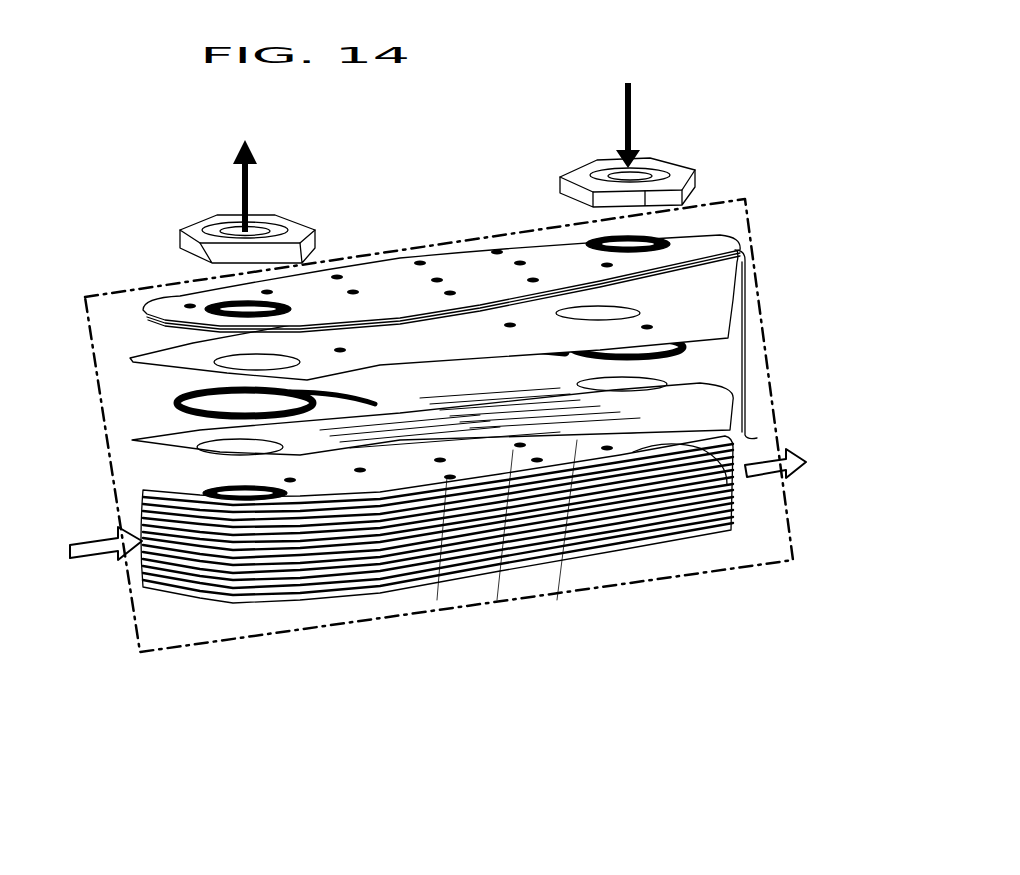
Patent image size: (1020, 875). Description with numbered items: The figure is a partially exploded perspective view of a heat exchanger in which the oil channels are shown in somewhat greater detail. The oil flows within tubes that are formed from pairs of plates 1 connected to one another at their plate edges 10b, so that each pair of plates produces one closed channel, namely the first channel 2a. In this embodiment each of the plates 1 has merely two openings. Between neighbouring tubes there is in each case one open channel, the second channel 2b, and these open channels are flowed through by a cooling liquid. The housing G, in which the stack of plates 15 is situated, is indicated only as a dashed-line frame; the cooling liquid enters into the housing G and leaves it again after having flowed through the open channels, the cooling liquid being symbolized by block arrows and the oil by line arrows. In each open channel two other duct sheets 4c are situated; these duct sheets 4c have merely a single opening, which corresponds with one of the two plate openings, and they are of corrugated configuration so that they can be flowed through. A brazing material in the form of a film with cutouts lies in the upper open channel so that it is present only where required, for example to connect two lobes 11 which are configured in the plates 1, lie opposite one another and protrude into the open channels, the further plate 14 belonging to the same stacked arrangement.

The plate 1 is at (160, 350).
The first channel 2a is at (748, 346).
The second channel 2b is at (233, 303).
The other duct sheet 4c is at (177, 402).
The plate edge 10b is at (745, 240).
The lobe 11 is at (420, 268).
The plate 14 is at (577, 440).
The plate stack 15 is at (280, 487).
The housing G is at (217, 642).